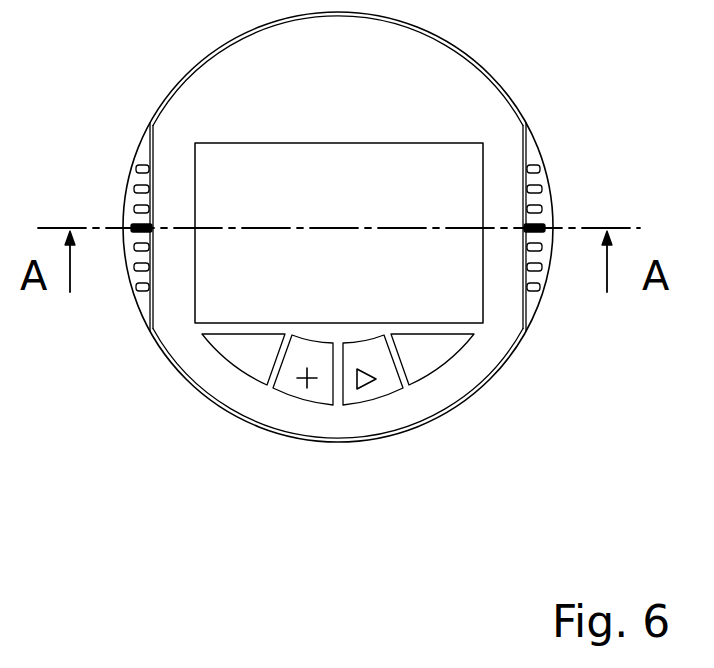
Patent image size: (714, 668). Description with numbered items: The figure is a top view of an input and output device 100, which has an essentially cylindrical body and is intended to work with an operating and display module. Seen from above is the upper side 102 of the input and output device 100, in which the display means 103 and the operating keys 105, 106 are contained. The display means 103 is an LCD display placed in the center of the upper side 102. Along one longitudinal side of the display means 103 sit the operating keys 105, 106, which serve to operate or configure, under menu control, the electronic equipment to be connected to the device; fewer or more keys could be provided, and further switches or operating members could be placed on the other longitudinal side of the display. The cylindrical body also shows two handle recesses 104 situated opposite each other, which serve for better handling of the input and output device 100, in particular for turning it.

The input and output device 100 is at (516, 78).
The upper side 102 is at (222, 92).
The display means 103 is at (212, 302).
The handle recesses 104 is at (138, 280).
The operating keys 105 is at (297, 393).
The operating keys 106 is at (428, 368).